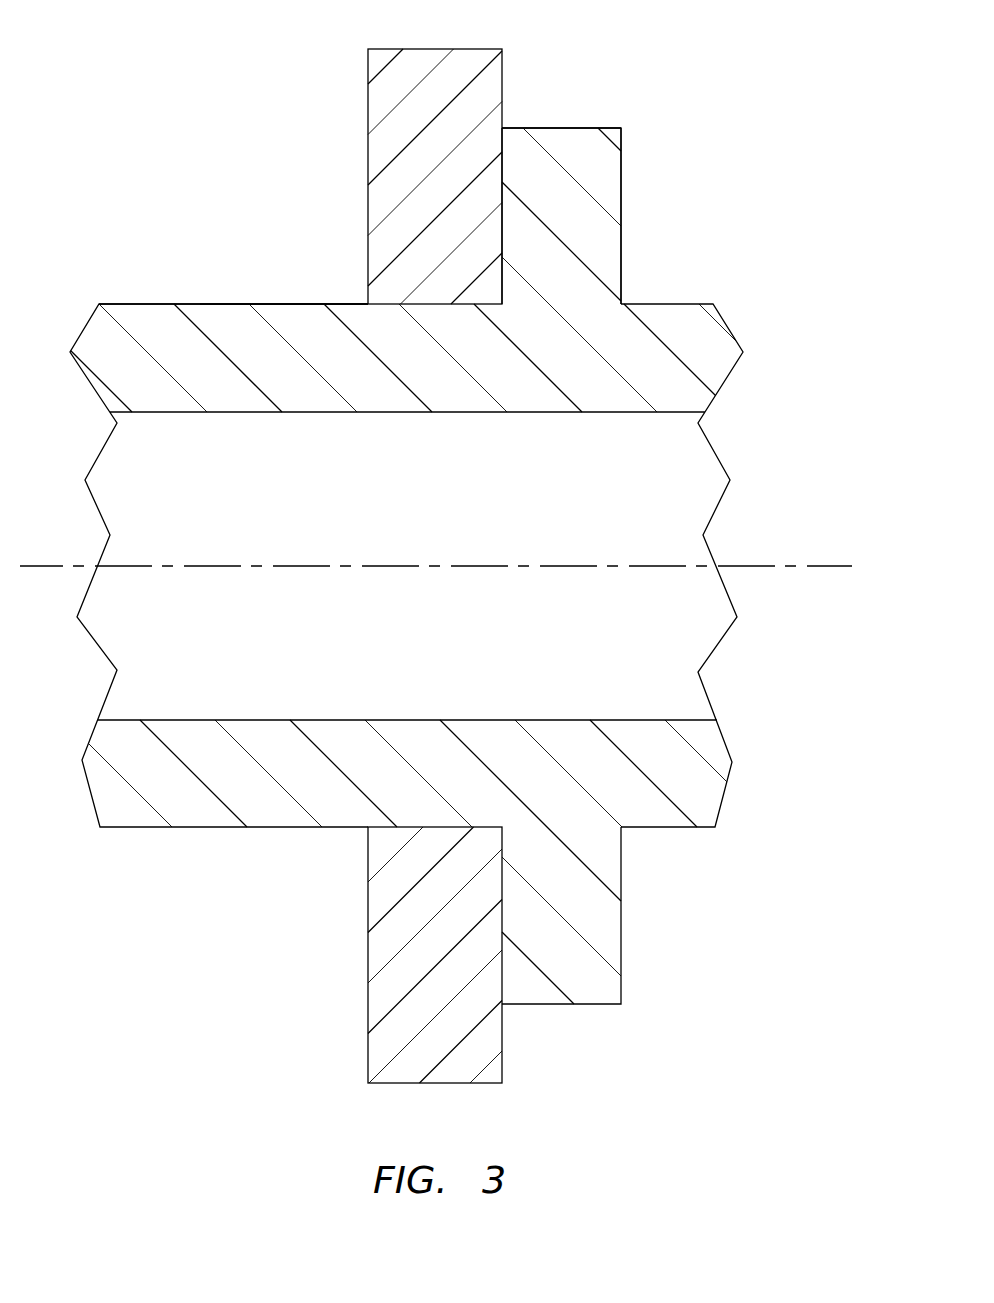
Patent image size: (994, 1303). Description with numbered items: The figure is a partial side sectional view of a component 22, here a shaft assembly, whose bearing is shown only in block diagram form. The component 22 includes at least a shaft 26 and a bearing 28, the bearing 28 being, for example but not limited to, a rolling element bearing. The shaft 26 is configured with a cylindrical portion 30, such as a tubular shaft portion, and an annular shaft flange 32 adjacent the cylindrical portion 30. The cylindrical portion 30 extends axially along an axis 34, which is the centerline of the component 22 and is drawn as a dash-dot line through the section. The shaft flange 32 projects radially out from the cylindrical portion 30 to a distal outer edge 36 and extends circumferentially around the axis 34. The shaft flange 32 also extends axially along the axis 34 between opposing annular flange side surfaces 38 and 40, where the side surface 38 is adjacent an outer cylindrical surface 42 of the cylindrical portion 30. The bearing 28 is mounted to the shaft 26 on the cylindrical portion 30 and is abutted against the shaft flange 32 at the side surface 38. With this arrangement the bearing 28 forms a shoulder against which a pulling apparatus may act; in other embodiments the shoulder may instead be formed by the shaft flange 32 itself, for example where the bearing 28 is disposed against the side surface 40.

The component 22 is at (737, 82).
The shaft 26 is at (740, 322).
The bearing 28 is at (366, 118).
The cylindrical portion 30 is at (187, 299).
The shaft flange 32 is at (624, 157).
The axis 34 is at (818, 568).
The distal outer edge 36 is at (578, 128).
The flange side surface 38 is at (502, 166).
The flange side surface 40 is at (622, 193).
The outer surface 42 is at (272, 302).